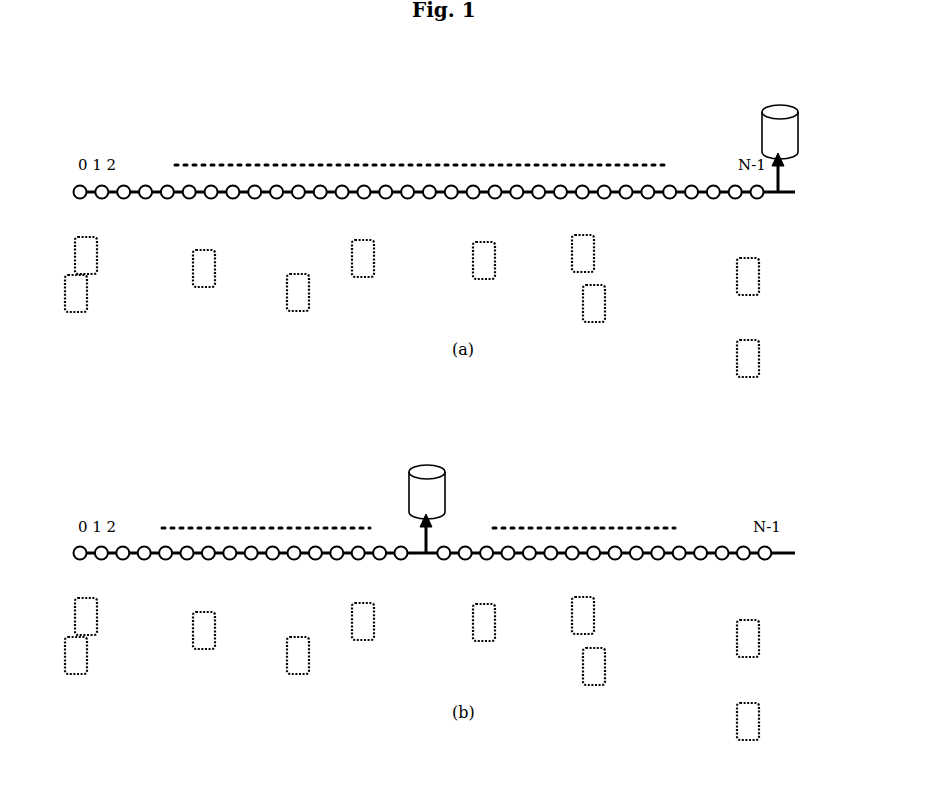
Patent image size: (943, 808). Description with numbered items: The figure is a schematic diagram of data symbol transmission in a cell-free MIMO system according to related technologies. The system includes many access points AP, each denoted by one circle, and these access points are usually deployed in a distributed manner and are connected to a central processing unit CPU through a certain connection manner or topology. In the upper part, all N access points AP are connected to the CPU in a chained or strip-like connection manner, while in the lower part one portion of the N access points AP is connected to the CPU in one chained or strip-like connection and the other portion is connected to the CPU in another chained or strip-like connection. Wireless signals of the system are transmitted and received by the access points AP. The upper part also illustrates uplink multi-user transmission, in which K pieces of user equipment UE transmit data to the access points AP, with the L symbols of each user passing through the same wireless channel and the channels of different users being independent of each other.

The user equipment UE is at (207, 270).
The access point AP is at (452, 201).
The central processing unit CPU is at (604, 313).